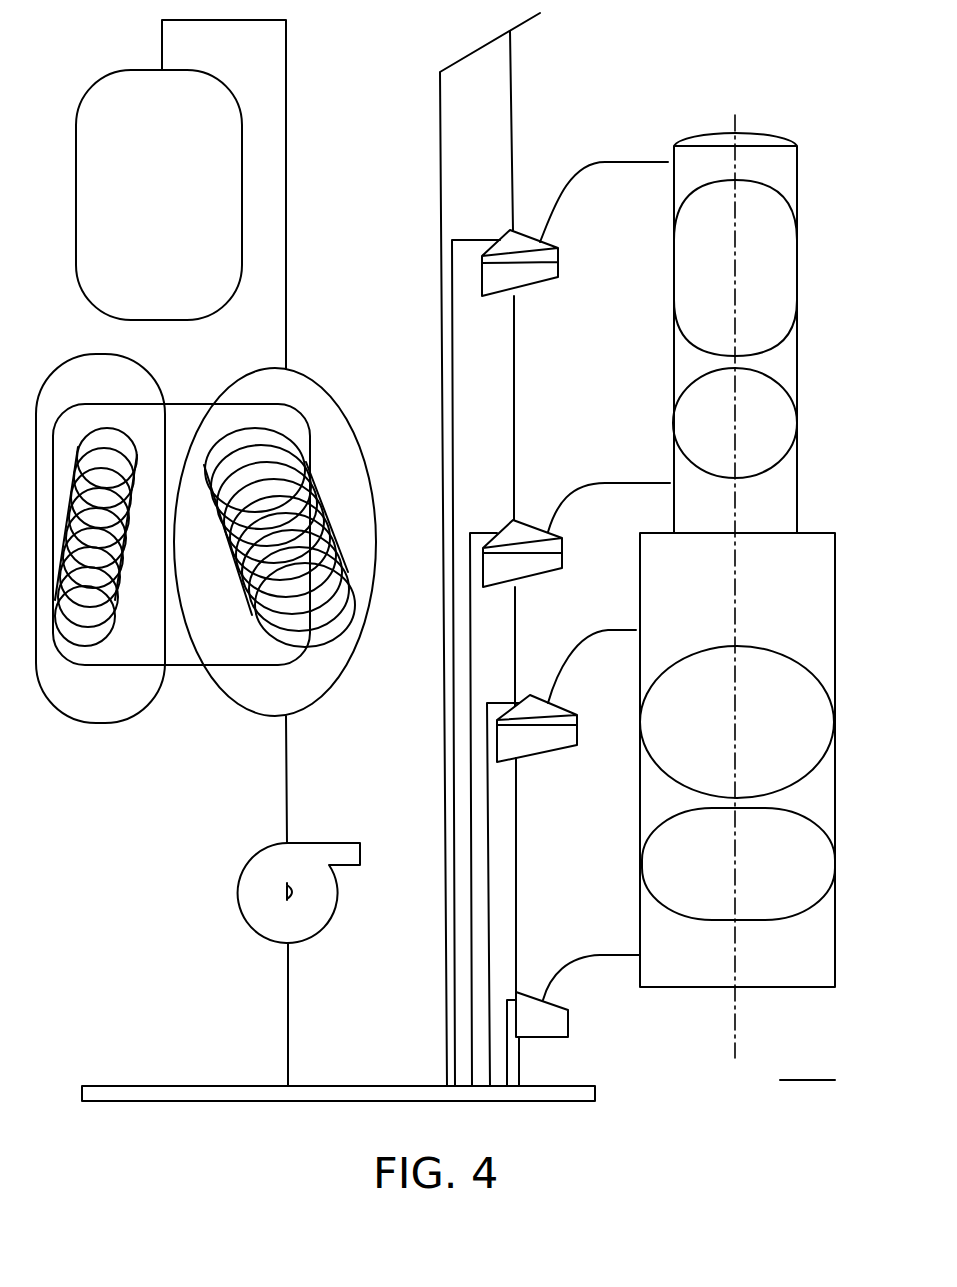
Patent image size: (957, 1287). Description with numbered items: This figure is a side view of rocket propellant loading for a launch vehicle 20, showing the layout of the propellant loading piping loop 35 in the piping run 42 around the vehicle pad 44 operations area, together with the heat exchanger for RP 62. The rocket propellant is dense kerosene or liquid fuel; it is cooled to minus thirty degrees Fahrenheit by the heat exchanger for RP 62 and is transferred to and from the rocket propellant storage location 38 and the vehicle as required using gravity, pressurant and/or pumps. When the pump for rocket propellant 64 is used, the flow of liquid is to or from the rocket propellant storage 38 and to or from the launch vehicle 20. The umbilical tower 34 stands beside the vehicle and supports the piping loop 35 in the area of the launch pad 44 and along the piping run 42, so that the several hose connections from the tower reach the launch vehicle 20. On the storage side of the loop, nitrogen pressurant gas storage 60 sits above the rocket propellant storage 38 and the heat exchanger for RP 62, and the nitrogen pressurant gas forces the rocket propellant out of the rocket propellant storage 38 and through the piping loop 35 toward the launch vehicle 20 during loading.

The launch vehicle 20 is at (699, 131).
The umbilical tower 34 is at (459, 145).
The propellant loading piping loop 35 is at (627, 157).
The rocket propellant storage location 38 is at (331, 392).
The piping run 42 is at (185, 1086).
The vehicle pad 44 is at (813, 1080).
The nitrogen pressurant gas storage 60 is at (179, 220).
The heat exchanger for RP 62 is at (67, 693).
The pump for rocket propellant 64 is at (268, 860).